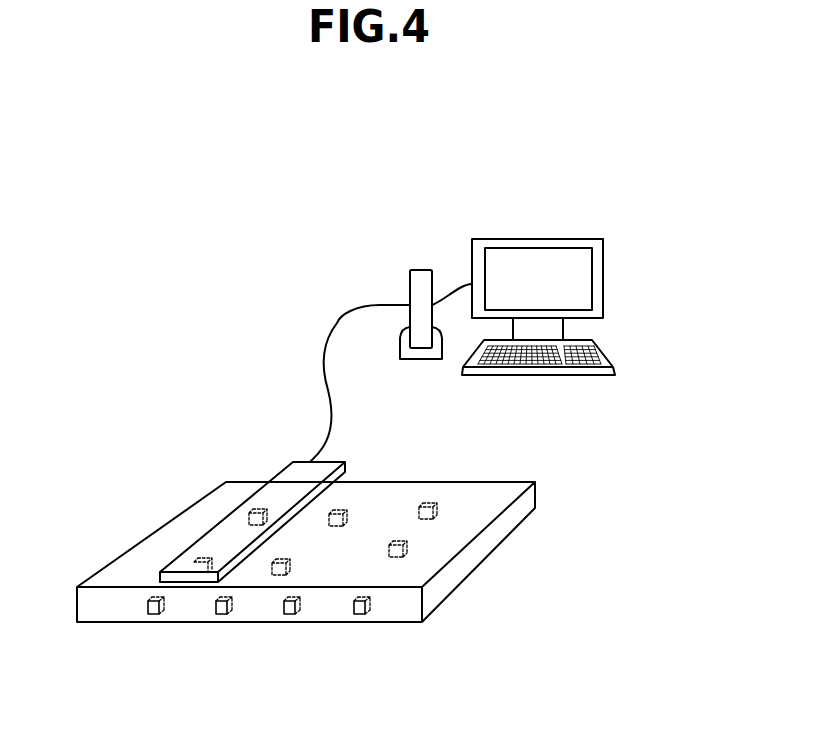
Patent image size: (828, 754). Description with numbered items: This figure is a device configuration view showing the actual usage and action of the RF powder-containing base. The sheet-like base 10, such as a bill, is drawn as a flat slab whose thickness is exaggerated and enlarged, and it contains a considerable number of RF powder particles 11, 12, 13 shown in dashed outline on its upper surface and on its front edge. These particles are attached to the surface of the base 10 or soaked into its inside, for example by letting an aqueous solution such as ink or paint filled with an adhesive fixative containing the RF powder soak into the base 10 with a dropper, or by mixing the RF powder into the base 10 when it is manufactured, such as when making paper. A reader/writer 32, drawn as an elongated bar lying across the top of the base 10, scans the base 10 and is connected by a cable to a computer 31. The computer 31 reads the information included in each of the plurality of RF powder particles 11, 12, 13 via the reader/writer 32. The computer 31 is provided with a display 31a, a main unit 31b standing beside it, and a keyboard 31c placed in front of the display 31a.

The base 10 is at (475, 572).
The RF powder particle 11 is at (154, 614).
The RF powder particle 12 is at (222, 614).
The RF powder particle 13 is at (290, 614).
The computer 31 is at (541, 267).
The display 31a is at (604, 273).
The main unit 31b is at (422, 268).
The keyboard 31c is at (605, 352).
The reader/writer 32 is at (276, 474).